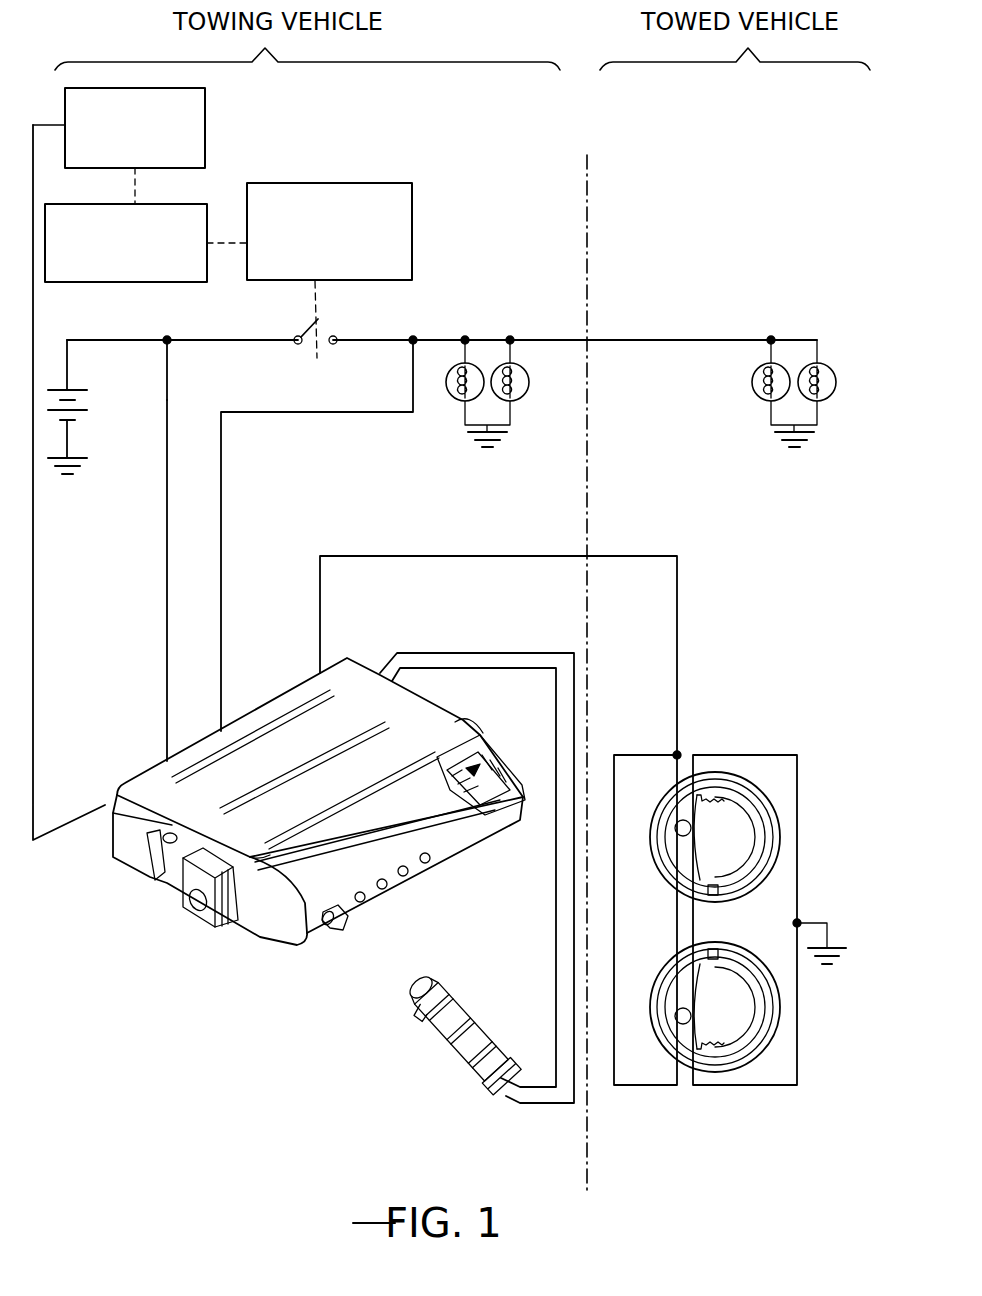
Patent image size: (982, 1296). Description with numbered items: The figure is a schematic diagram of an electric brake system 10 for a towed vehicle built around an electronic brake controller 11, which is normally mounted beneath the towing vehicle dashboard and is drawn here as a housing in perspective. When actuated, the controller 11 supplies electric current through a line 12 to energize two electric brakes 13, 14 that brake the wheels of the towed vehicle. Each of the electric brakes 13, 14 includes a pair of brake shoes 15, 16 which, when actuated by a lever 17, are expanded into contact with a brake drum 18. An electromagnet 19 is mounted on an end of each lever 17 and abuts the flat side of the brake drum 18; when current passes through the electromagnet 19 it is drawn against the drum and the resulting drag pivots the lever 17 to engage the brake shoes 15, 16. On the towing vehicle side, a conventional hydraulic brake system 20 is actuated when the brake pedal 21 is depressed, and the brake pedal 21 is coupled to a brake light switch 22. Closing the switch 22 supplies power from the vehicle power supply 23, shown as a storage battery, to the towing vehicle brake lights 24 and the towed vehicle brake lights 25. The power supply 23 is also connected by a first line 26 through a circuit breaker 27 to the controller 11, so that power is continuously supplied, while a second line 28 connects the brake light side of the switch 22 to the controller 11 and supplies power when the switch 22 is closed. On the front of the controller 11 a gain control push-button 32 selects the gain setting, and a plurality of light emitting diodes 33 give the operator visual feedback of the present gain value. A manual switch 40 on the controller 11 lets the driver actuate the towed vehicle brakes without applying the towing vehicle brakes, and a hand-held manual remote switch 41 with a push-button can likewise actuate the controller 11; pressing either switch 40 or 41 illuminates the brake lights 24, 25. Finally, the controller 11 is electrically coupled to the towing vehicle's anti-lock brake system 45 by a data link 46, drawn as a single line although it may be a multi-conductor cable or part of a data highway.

The electric brake system 10 is at (628, 518).
The electronic brake controller 11 is at (360, 655).
The line 12 is at (500, 556).
The electric brake 13 is at (780, 812).
The electric brake 14 is at (750, 1068).
The brake shoe 15 is at (672, 823).
The brake shoe 16 is at (765, 872).
The lever 17 is at (702, 855).
The brake drum 18 is at (700, 927).
The electromagnet 19 is at (691, 828).
The hydraulic brake system 20 is at (139, 283).
The brake pedal 21 is at (413, 243).
The brake light switch 22 is at (317, 339).
The vehicle power supply 23 is at (80, 413).
The towing vehicle brake light 24 is at (452, 400).
The towed vehicle brake light 25 is at (752, 388).
The first line 26 is at (164, 598).
The circuit breaker 27 is at (165, 385).
The second line 28 is at (222, 583).
The gain control push-button 32 is at (343, 930).
The light emitting diodes 33 is at (365, 900).
The manual switch 40 is at (510, 820).
The manual remote switch 41 is at (477, 1067).
The anti-lock brake system 45 is at (205, 125).
The data link 46 is at (34, 572).